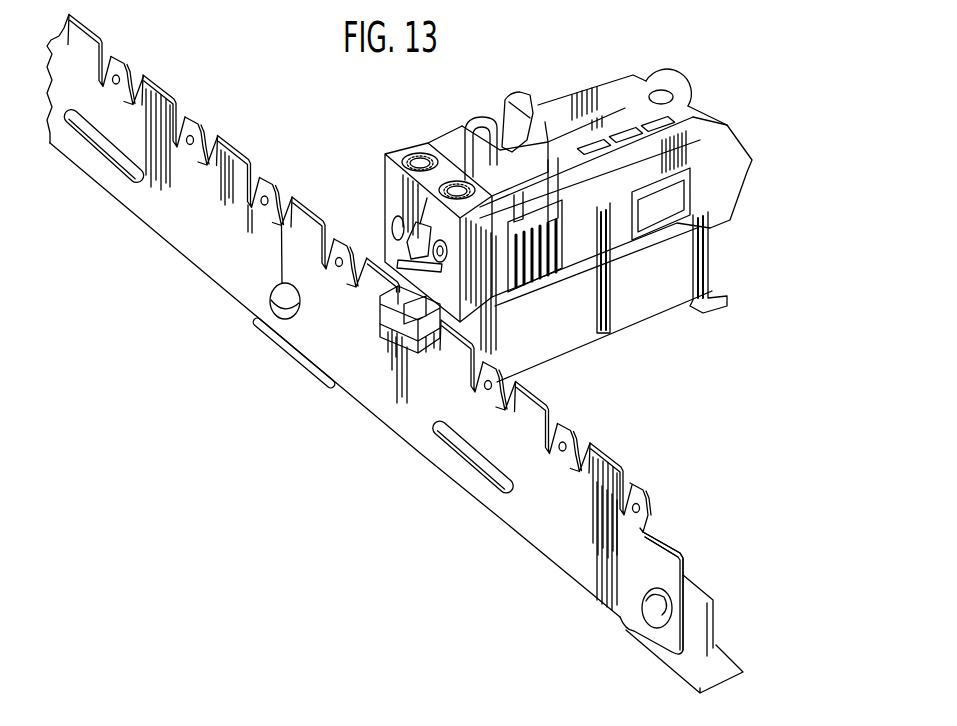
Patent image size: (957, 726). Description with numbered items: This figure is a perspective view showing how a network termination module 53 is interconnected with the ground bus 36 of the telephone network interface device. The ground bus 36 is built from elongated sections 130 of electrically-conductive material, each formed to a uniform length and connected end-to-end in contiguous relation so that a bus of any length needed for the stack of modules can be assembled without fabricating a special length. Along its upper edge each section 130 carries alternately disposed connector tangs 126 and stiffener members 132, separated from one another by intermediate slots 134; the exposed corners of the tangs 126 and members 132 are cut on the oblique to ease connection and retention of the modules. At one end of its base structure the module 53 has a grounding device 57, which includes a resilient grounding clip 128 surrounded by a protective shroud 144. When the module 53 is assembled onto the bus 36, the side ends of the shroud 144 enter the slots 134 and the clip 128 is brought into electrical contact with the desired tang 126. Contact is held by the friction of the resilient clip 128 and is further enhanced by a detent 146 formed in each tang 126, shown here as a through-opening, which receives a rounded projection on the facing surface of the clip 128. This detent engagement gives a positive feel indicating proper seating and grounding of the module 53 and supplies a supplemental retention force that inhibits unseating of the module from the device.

The section 130 is at (229, 268).
The ground bus 36 is at (304, 197).
The grounding device 57 is at (393, 262).
The grounding clip 128 is at (383, 298).
The protective shroud 144 is at (387, 328).
The network termination module 53 is at (724, 234).
The stiffener member 132 is at (535, 391).
The slot 134 is at (579, 446).
The tang 126 is at (633, 481).
The detent 146 is at (648, 522).